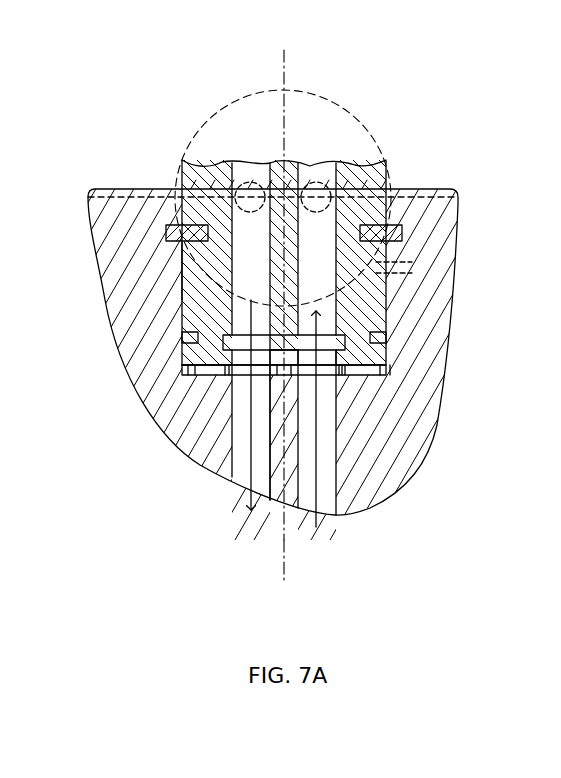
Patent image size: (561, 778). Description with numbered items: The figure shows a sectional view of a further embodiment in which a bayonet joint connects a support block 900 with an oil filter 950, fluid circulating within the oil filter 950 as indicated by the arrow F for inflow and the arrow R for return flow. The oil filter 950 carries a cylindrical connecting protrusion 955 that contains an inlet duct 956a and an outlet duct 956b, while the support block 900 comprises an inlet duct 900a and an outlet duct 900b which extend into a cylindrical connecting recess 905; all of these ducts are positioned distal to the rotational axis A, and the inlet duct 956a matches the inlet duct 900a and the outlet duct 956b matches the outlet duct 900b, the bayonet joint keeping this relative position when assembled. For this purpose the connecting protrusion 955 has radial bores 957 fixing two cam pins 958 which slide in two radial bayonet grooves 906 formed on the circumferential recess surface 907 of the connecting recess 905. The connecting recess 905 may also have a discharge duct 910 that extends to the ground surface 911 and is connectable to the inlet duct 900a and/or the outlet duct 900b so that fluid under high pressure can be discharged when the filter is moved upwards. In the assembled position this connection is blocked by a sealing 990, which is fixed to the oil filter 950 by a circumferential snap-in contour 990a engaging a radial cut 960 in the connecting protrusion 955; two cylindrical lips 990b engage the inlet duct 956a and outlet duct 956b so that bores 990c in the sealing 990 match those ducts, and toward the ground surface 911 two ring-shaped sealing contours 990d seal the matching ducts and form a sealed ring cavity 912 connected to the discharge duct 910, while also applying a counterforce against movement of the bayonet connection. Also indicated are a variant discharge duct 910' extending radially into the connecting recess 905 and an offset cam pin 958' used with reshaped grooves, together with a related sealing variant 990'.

The support block 900 is at (424, 188).
The inlet duct 900a is at (317, 497).
The outlet duct 900b is at (262, 482).
The cylindrical connecting recess 905 is at (182, 368).
The radial bayonet grooves 906 is at (181, 250).
The circumferential recess surface 907 is at (166, 233).
The discharge duct 910 is at (169, 455).
The discharge duct 910' is at (458, 249).
The ground surface 911 is at (350, 377).
The ring cavity 912 is at (183, 380).
The oil filter 950 is at (188, 160).
The connecting protrusion 955 is at (178, 190).
The inlet duct 956a is at (314, 185).
The outlet duct 956b is at (249, 185).
The radial bores 957 is at (182, 337).
The cam pins 958 is at (154, 249).
The offset cam pin 958' is at (418, 249).
The radial cut 960 is at (388, 337).
The sealing 990 is at (350, 369).
The valve pocket 990' is at (381, 308).
The circumferential snap-in contour 990a is at (388, 373).
The cylindrical lips 990b is at (235, 378).
The bores 990c is at (250, 378).
The ring-shaped sealing contours 990d is at (195, 378).
The return flow arrow R is at (250, 430).
The inflow arrow F is at (313, 436).
The rotational axis A is at (285, 555).